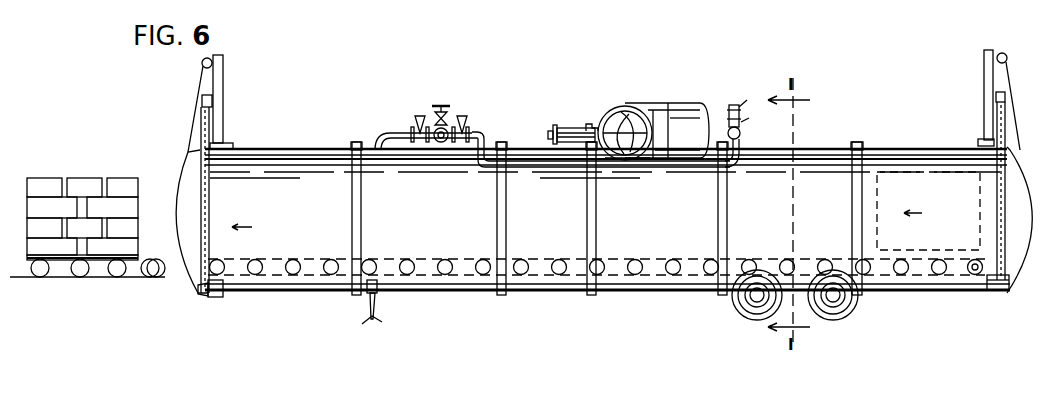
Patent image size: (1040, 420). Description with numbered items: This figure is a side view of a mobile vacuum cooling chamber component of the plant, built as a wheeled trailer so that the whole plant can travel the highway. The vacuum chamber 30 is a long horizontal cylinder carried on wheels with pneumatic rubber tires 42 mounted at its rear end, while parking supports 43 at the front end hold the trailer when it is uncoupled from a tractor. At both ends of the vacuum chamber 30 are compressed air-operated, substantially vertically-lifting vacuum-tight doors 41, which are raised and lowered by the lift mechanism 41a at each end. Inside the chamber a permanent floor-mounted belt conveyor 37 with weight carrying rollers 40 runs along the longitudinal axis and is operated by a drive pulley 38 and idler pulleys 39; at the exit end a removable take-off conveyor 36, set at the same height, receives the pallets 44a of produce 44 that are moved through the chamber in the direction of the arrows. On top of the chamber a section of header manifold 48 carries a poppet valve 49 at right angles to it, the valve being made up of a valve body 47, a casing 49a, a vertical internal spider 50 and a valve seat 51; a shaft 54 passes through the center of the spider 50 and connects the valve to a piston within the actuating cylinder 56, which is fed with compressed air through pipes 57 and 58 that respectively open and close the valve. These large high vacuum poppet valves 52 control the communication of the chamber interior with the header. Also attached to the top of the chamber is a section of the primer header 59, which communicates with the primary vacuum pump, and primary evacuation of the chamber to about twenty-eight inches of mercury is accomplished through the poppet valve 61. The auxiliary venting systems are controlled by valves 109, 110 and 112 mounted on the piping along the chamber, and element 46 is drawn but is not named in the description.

The vacuum chamber 30 is at (313, 292).
The take-off conveyor 36 is at (138, 278).
The belt conveyor 37 is at (605, 257).
The drive pulley 38 is at (970, 273).
The idler pulleys 39 is at (225, 273).
The weight carrying rollers 40 is at (523, 272).
The vertically-lifting doors 41 is at (177, 223).
The lift mechanism 41a is at (222, 102).
The pneumatic rubber tires 42 is at (860, 300).
The parking supports 43 is at (380, 318).
The produce 44 is at (87, 177).
The pallets 44a is at (32, 257).
The blower housing 46 is at (692, 153).
The valve body 47 is at (628, 115).
The header manifold 48 is at (627, 118).
The poppet valve 49 is at (655, 145).
The casing 49a is at (675, 142).
The internal spider 50 is at (623, 155).
The valve seat 51 is at (655, 107).
The poppet valves 52 is at (663, 120).
The shaft 54 is at (607, 125).
The actuating cylinder 56 is at (568, 126).
The pipe 57 is at (548, 122).
The pipe 58 is at (597, 123).
The primer header 59 is at (740, 132).
The poppet valve 61 is at (725, 115).
The venting valve 109 is at (442, 106).
The venting valve 110 is at (418, 117).
The venting valve 112 is at (458, 117).